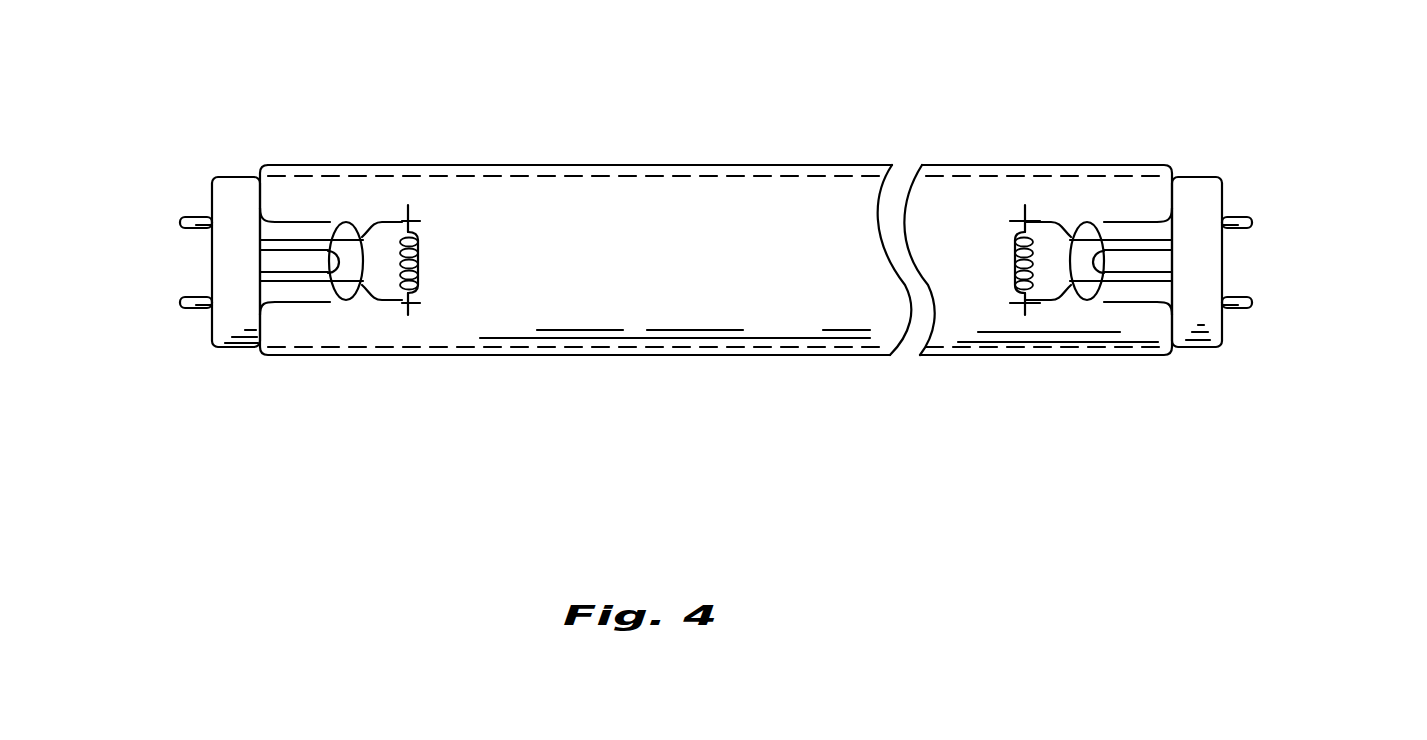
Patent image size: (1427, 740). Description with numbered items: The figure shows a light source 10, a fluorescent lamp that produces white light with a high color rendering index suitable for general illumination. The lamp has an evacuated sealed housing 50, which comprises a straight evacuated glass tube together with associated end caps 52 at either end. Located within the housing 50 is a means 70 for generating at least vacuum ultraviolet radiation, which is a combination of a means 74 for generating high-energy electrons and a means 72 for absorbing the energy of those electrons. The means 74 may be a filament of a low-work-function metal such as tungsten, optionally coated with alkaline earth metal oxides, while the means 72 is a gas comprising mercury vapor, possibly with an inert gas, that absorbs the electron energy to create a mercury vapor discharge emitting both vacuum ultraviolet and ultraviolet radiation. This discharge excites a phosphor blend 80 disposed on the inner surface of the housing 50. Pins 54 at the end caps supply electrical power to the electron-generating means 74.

The light source 10 is at (785, 120).
The evacuated sealed housing 50 is at (867, 357).
The end caps 52 is at (212, 347).
The pins 54 is at (180, 224).
The means for generating at least VUV radiation 70 is at (547, 477).
The means for absorbing the energy of the high-energy electrons 72 is at (565, 310).
The means for generating high-energy electrons 74 is at (420, 297).
The phosphor blend 80 is at (803, 322).